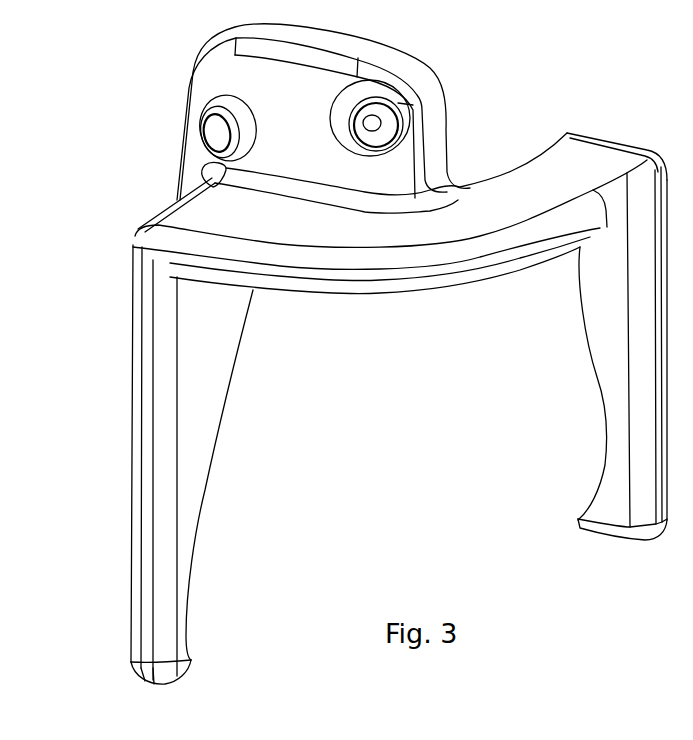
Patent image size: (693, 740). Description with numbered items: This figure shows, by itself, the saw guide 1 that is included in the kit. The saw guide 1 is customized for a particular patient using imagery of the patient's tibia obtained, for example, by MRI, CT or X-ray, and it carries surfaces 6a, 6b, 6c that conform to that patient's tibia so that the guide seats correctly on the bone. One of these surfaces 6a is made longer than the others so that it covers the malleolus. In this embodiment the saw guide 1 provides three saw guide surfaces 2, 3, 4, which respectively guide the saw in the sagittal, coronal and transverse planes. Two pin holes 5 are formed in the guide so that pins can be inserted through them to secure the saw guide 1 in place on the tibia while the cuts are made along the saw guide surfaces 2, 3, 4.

The saw guide 1 is at (551, 199).
The saw guide surface 2 is at (607, 272).
The saw guide surface 3 is at (213, 345).
The saw guide surface 4 is at (416, 298).
The pin holes 5 is at (222, 128).
The conforming surface 6a is at (210, 464).
The conforming surface 6b is at (598, 377).
The conforming surface 6c is at (521, 168).